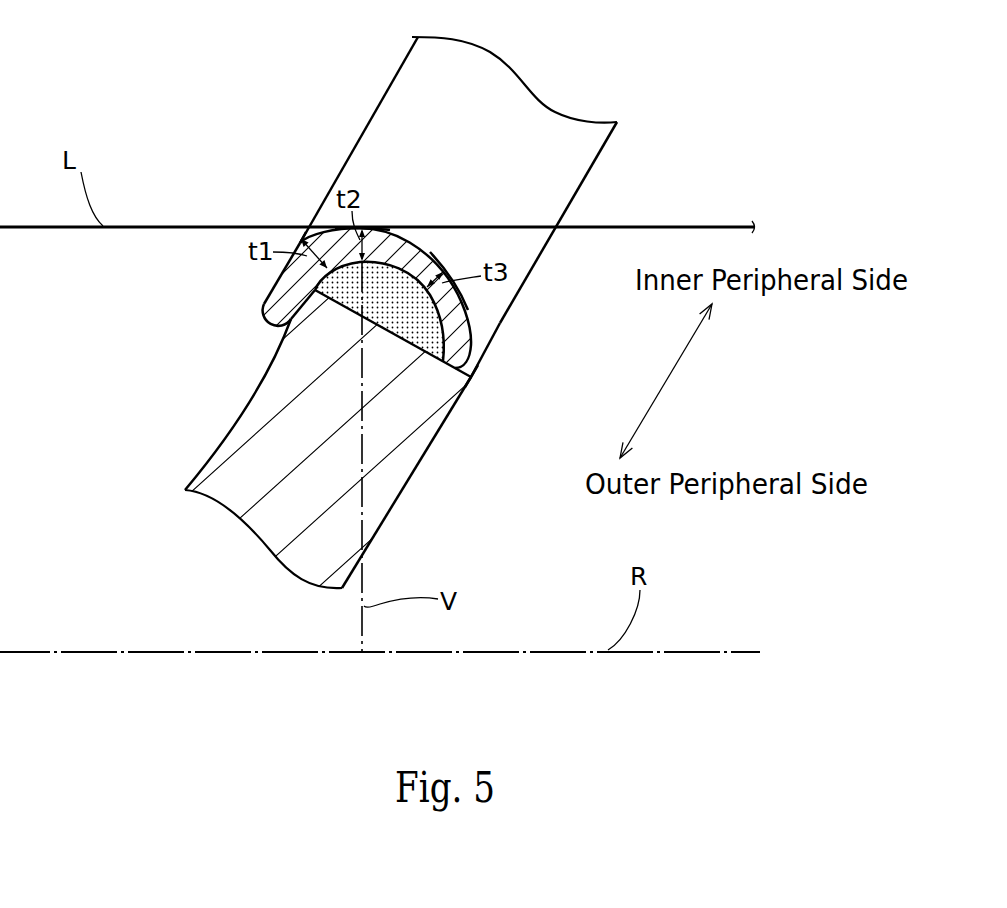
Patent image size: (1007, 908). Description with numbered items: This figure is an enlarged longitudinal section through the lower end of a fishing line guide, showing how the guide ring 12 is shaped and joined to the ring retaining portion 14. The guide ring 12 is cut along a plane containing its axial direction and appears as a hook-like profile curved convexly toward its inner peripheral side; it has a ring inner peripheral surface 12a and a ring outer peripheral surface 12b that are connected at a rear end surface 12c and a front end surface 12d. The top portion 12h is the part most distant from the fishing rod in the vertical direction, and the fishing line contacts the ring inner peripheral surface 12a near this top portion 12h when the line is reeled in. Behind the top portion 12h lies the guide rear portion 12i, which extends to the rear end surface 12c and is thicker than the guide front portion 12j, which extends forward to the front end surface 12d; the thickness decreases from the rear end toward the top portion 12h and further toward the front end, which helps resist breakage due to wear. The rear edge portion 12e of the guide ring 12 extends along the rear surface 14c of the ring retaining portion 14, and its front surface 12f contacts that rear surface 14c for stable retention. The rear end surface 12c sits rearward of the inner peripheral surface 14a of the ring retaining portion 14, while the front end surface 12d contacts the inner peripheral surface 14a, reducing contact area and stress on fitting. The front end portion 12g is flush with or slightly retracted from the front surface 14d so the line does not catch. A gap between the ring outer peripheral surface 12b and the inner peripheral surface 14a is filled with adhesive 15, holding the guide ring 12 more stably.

The guide ring 12 is at (311, 97).
The ring inner peripheral surface 12a is at (440, 258).
The ring outer peripheral surface 12b is at (384, 266).
The rear end surface 12c is at (265, 330).
The front end surface 12d is at (453, 382).
The rear edge portion 12e is at (283, 291).
The front surface 12f is at (314, 305).
The front end portion 12g is at (500, 322).
The top portion 12h is at (350, 228).
The guide rear portion 12i is at (300, 236).
The guide front portion 12j is at (453, 263).
The ring retaining portion 14 is at (375, 445).
The inner peripheral surface 14a is at (389, 328).
The rear surface 14c is at (228, 430).
The front surface 14d is at (444, 440).
The adhesive 15 is at (406, 312).